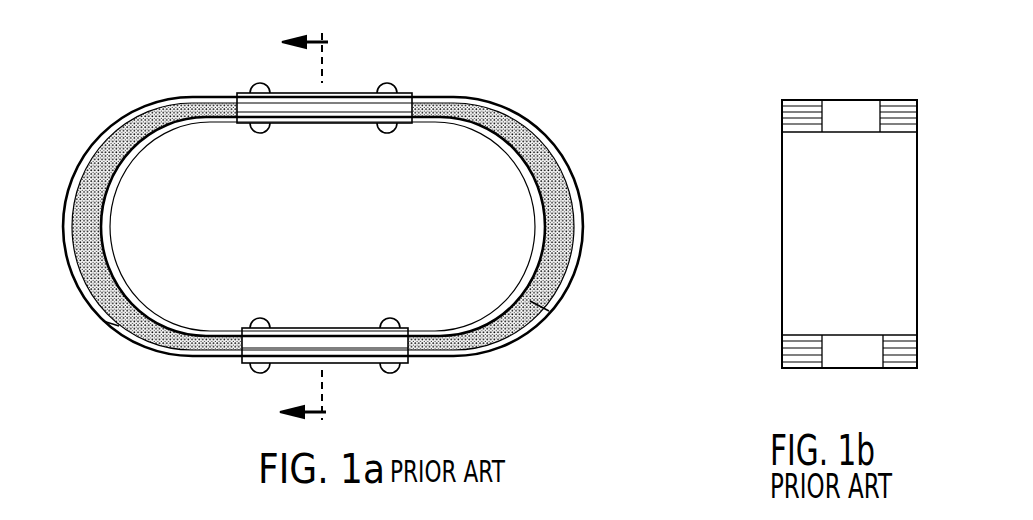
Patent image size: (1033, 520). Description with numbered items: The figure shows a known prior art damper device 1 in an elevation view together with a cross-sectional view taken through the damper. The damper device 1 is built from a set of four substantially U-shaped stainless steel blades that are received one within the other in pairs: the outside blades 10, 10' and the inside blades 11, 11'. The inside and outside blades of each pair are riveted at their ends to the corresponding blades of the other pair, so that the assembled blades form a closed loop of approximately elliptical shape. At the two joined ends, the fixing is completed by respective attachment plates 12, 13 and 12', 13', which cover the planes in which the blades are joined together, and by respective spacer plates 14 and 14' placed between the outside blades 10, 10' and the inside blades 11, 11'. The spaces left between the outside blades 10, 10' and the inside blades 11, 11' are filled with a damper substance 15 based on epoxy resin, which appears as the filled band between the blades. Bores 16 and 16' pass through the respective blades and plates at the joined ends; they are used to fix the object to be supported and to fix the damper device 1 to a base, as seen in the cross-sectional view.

In FIG. 1A, the damper device 1 is at (342, 227).
In FIG. 1B, the damper device 1 is at (812, 207).
In FIG. 1A, the outside blade 10 is at (180, 226).
In FIG. 1A, the outside blade 10' is at (485, 226).
In FIG. 1A, the inside blade 11 is at (212, 226).
In FIG. 1A, the inside blade 11' is at (434, 226).
In FIG. 1A, the attachment plate 12 is at (310, 75).
In FIG. 1A, the attachment plate 12' is at (292, 371).
In FIG. 1A, the attachment plate 13 is at (293, 133).
In FIG. 1A, the attachment plate 13' is at (304, 318).
In FIG. 1A, the spacer plate 14 is at (323, 192).
In FIG. 1A, the spacer plate 14' is at (323, 226).
In FIG. 1A, the damper substance 15 is at (102, 325).
In FIG. 1B, the bore 16 is at (849, 89).
In FIG. 1B, the bore 16' is at (849, 318).